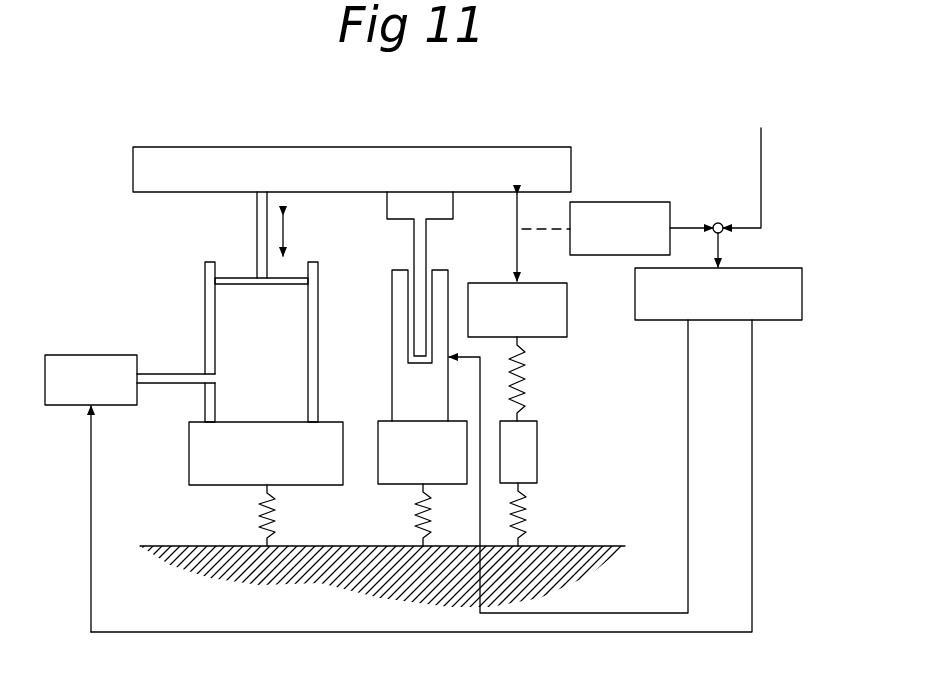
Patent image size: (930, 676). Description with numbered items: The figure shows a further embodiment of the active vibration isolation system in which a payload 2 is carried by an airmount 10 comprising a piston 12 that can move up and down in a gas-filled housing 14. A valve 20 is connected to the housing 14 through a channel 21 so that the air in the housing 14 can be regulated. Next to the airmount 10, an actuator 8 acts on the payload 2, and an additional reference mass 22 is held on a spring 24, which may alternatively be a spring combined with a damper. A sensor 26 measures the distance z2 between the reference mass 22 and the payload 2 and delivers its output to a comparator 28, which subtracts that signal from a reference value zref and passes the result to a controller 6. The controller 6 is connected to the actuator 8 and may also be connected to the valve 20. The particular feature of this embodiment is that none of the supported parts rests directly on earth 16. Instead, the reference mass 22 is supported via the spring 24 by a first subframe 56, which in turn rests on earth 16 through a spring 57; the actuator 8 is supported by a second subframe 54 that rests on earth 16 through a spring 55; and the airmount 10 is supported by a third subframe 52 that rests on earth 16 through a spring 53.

The payload 2 is at (240, 163).
The controller 6 is at (760, 278).
The actuator 8 is at (437, 249).
The airmount 10 is at (306, 234).
The piston 12 is at (243, 284).
The housing 14 is at (297, 332).
The earth 16 is at (562, 567).
The valve 20 is at (55, 405).
The channel 21 is at (173, 375).
The reference mass 22 is at (550, 308).
The spring 24 is at (523, 372).
The sensor 26 is at (628, 211).
The comparator 28 is at (717, 219).
The third subframe 52 is at (212, 457).
The spring 53 is at (263, 517).
The second subframe 54 is at (395, 437).
The spring 55 is at (411, 512).
The first subframe 56 is at (530, 443).
The spring 57 is at (528, 503).